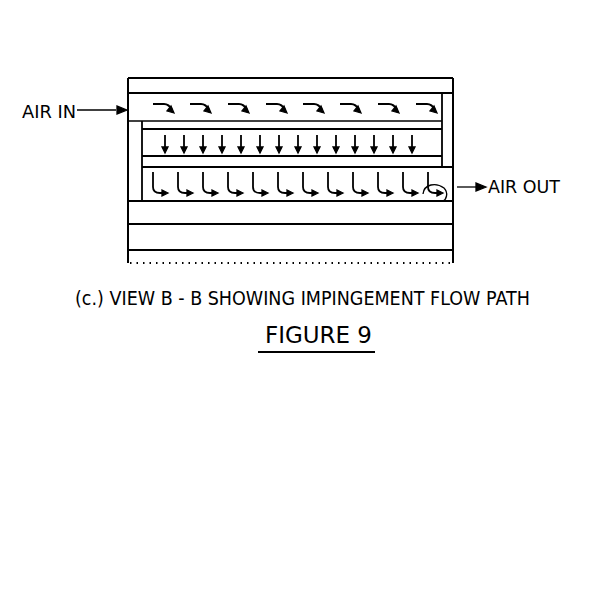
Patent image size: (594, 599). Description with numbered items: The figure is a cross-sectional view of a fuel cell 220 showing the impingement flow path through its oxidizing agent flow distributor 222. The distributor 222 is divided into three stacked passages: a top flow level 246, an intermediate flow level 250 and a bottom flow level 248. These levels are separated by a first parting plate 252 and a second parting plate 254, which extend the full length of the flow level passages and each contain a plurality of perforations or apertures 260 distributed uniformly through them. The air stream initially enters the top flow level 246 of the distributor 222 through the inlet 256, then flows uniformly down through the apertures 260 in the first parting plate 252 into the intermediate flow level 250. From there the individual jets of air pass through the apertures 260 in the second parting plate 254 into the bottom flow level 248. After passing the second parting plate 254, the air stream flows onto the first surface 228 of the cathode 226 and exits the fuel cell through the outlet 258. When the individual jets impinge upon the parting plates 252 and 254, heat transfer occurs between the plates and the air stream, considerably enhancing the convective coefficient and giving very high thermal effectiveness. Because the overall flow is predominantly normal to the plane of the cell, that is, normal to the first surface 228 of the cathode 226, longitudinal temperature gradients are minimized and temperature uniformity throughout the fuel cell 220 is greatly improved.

The fuel cell 220 is at (198, 66).
The oxidizing agent flow distributor 222 is at (447, 100).
The cathode 226 is at (145, 212).
The first surface 228 is at (443, 201).
The top flow level 246 is at (400, 96).
The bottom flow level 248 is at (243, 180).
The intermediate flow level 250 is at (142, 142).
The first parting plate 252 is at (336, 125).
The second parting plate 254 is at (142, 171).
The inlet 256 is at (127, 97).
The outlet 258 is at (453, 168).
The apertures 260 is at (263, 121).